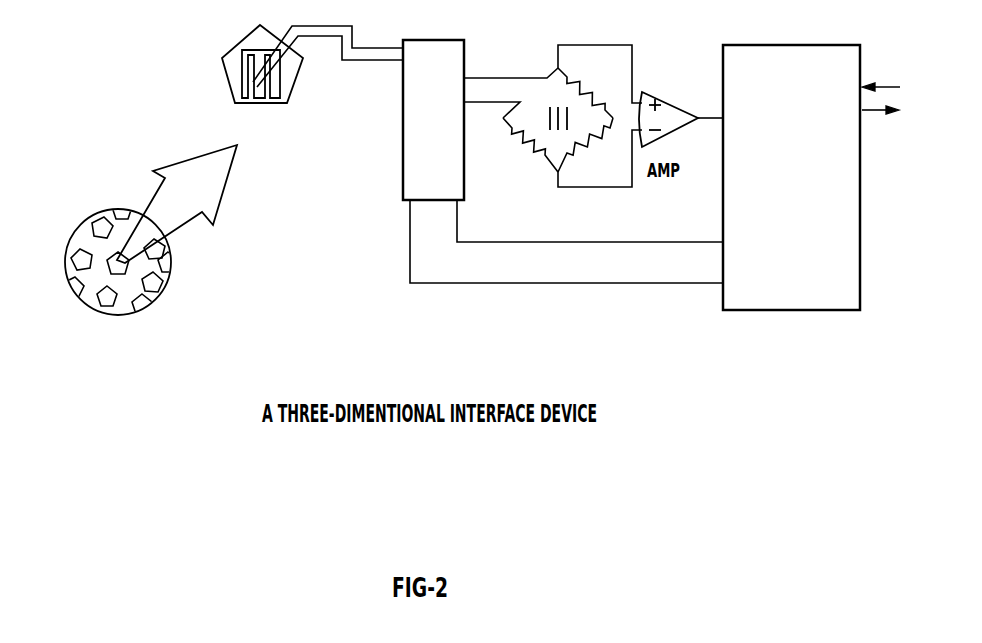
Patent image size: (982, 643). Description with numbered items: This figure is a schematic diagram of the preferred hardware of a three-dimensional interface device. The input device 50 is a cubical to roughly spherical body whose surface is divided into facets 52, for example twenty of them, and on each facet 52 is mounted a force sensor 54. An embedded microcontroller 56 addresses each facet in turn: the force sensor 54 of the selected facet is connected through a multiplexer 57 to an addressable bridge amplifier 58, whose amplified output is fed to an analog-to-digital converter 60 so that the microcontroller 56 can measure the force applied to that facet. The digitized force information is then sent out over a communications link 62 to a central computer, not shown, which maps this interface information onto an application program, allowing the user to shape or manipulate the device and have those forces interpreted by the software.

The input device 50 is at (142, 249).
The facet 52 is at (262, 83).
The force sensor 54 is at (253, 82).
The embedded microcontroller 56 is at (386, 312).
The multiplexer 57 is at (433, 120).
The addressable bridge amplifier 58 is at (553, 137).
The analog-to-digital converter 60 is at (791, 177).
The communications link 62 is at (863, 88).